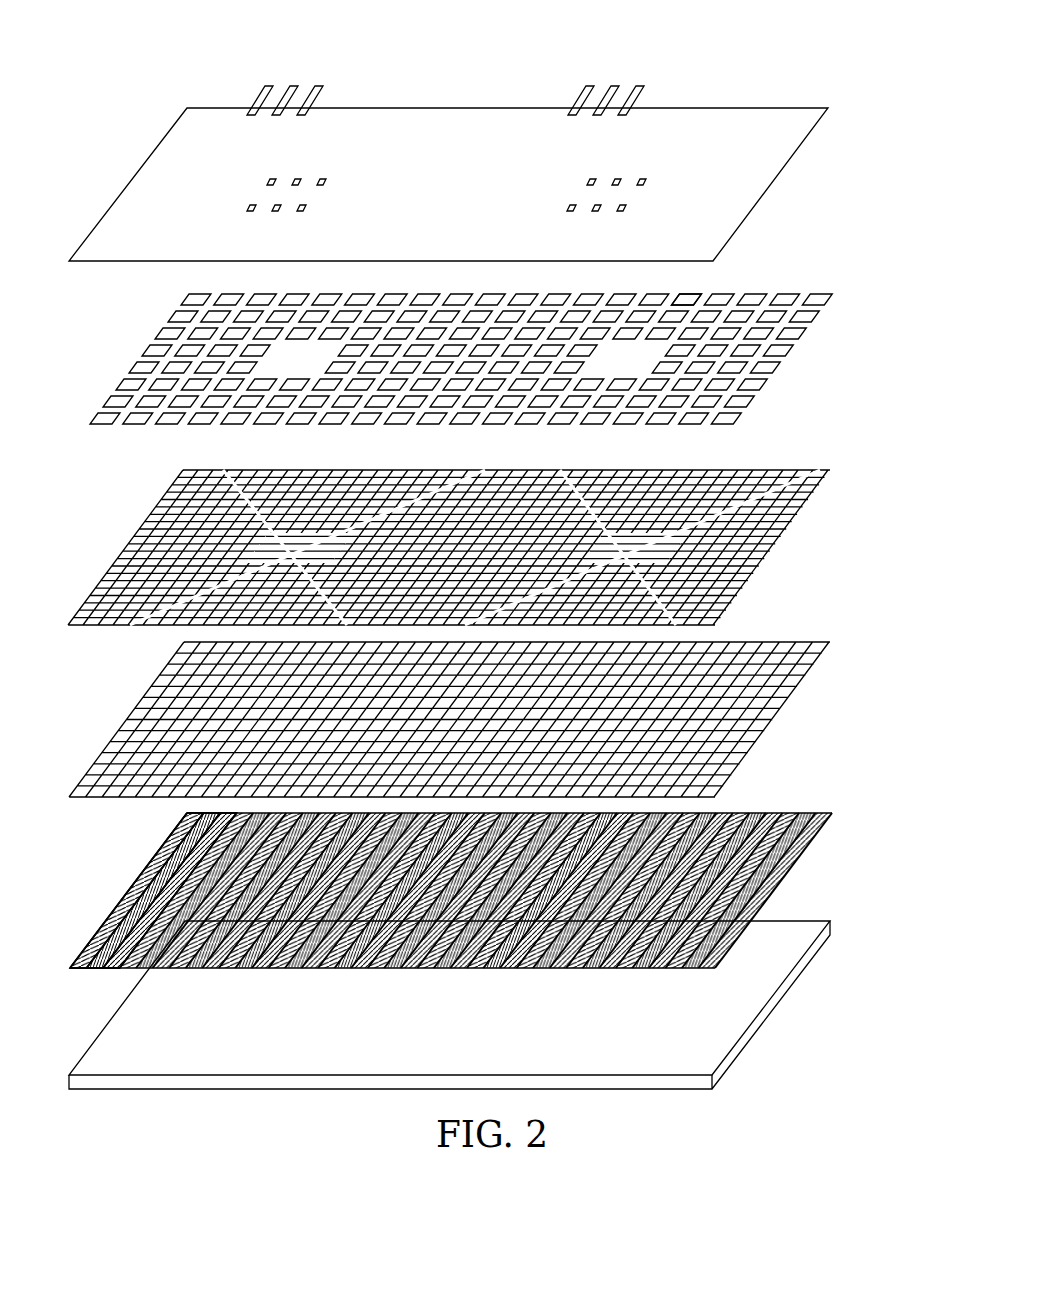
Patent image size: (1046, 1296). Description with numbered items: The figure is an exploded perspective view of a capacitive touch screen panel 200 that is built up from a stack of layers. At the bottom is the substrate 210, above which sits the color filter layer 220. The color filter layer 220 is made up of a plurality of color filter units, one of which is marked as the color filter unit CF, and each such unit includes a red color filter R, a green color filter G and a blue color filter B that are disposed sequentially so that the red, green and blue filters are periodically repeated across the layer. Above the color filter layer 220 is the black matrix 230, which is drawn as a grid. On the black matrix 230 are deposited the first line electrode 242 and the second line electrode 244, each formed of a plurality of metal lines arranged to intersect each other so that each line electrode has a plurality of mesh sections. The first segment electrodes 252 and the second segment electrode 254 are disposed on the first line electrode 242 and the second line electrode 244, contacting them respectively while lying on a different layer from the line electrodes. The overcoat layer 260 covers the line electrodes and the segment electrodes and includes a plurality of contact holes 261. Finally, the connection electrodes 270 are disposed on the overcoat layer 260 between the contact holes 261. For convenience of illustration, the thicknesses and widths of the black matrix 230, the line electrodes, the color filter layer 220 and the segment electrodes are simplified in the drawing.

The touch screen panel 200 is at (788, 35).
The substrate 210 is at (800, 968).
The color filter layer 220 is at (786, 876).
The red color filter R is at (80, 970).
The green color filter G is at (97, 970).
The blue color filter B is at (114, 970).
The color filter unit CF is at (92, 1018).
The black matrix 230 is at (786, 702).
The first line electrode 242 is at (790, 540).
The second line electrode 244 is at (716, 472).
The first segment electrodes 252 is at (757, 366).
The second segment electrode 254 is at (678, 300).
The overcoat layer 260 is at (787, 167).
The contact holes 261 is at (267, 181).
The connection electrodes 270 is at (258, 102).